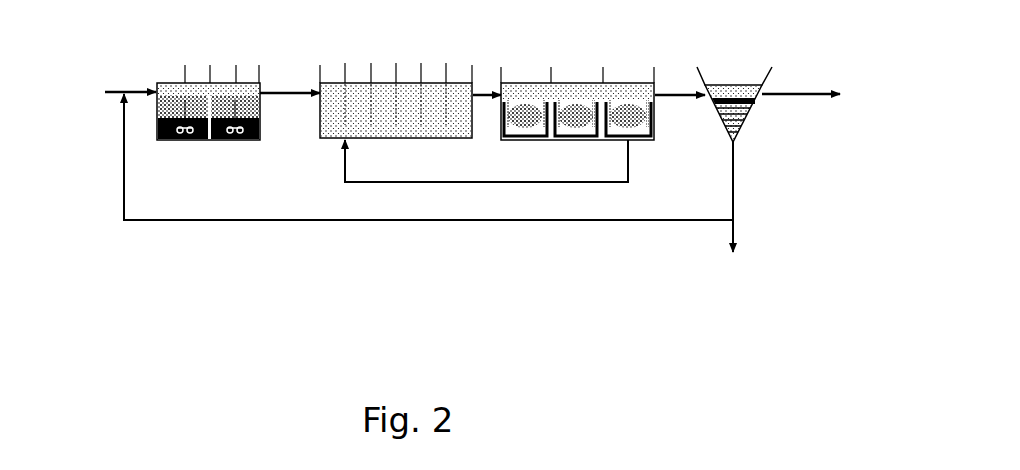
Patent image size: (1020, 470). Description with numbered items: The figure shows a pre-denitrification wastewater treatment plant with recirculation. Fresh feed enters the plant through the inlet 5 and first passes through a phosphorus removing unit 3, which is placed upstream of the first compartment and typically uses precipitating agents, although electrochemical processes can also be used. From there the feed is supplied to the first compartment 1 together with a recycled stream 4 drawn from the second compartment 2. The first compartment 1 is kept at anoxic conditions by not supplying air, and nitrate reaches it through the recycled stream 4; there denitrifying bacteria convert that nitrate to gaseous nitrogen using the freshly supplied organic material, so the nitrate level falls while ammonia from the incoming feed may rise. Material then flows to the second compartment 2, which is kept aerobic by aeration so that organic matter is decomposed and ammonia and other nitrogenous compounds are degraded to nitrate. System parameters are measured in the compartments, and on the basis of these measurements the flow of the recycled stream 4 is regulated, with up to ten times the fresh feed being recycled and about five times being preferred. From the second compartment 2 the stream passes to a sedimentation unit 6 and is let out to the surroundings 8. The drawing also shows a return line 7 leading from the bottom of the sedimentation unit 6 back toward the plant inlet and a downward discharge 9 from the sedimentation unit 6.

The first compartment 1 is at (396, 81).
The second compartment 2 is at (577, 83).
The phosphorus removing unit 3 is at (208, 83).
The recycled stream 4 is at (486, 162).
The influent inlet 5 is at (111, 92).
The sedimentation unit 6 is at (734, 89).
The sludge return line 7 is at (428, 186).
The surroundings 8 is at (824, 98).
The excess sludge discharge 9 is at (744, 224).